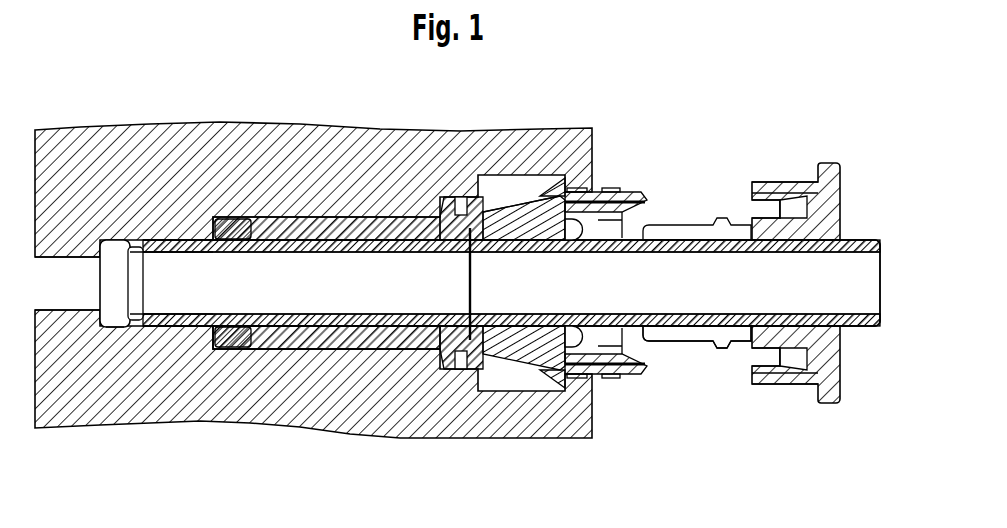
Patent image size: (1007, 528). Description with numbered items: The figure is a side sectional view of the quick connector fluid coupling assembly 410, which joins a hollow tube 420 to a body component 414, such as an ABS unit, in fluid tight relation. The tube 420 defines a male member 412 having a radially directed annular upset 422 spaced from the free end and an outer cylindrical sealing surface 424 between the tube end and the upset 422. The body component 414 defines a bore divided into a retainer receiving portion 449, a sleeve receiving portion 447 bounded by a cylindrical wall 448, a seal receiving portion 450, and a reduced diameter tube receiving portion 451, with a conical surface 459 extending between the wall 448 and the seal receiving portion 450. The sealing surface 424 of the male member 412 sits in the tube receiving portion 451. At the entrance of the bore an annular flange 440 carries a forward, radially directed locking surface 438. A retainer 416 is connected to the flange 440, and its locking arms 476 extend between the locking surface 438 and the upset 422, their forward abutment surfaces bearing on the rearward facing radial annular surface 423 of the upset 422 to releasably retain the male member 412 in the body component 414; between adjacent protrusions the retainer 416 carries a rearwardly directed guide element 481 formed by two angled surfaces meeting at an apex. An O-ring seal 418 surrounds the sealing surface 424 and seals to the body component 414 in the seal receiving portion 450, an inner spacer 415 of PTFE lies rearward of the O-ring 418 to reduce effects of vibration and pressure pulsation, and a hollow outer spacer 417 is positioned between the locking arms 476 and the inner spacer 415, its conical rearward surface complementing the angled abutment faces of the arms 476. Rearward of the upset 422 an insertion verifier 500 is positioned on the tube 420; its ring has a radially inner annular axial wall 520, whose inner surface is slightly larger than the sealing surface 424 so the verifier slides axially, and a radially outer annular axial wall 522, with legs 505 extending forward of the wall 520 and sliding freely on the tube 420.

The fluid coupling assembly 410 is at (696, 132).
The male member 412 is at (123, 257).
The body component 414 is at (294, 434).
The inner spacer 415 is at (266, 220).
The retainer 416 is at (596, 191).
The outer spacer 417 is at (437, 204).
The O-ring seal 418 is at (235, 352).
The hollow tube 420 is at (858, 239).
The annular upset 422 is at (463, 200).
The rearward facing radial annular surface 423 is at (500, 205).
The outer cylindrical sealing surface 424 is at (172, 242).
The locking surface 438 is at (555, 385).
The annular flange 440 is at (589, 375).
The sleeve receiving portion 447 is at (452, 222).
The cylindrical wall 448 is at (470, 362).
The retainer receiving portion 449 is at (503, 380).
The seal receiving portion 450 is at (314, 216).
The tube receiving portion 451 is at (115, 322).
The conical surface 459 is at (424, 336).
The locking arms 476 is at (546, 190).
The guide element 481 is at (644, 196).
The insertion verifier 500 is at (823, 162).
The legs 505 is at (692, 347).
The radially inner annular axial wall 520 is at (750, 228).
The radially outer annular axial wall 522 is at (763, 182).